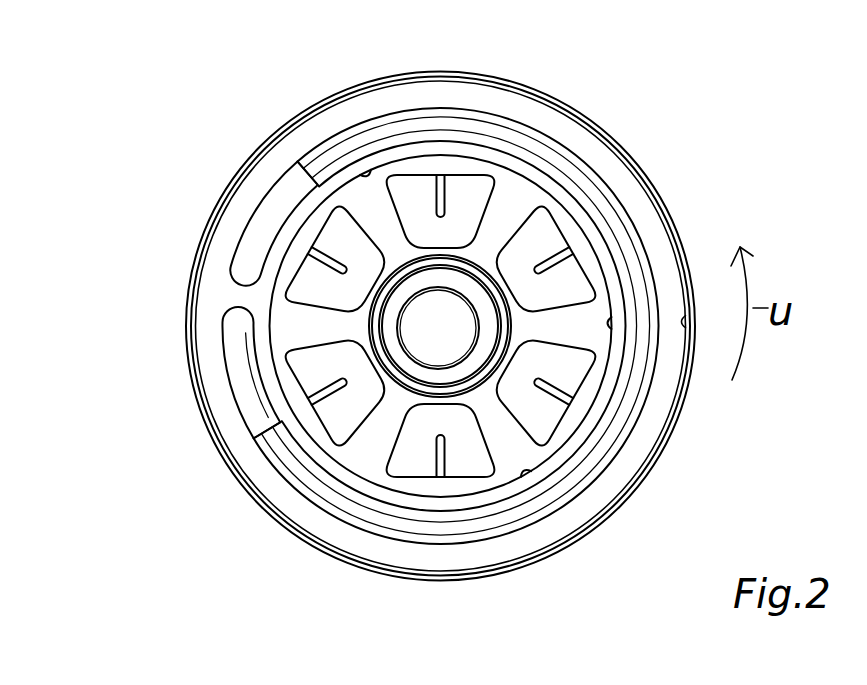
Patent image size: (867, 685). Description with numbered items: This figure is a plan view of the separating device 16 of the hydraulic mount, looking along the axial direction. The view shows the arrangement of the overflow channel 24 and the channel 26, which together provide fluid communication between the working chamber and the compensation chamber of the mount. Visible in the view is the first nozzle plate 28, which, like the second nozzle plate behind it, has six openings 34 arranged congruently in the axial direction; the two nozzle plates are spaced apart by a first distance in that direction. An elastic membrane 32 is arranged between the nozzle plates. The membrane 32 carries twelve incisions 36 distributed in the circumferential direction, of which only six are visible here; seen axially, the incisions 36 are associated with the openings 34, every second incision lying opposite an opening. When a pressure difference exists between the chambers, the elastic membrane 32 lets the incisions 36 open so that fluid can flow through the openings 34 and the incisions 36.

The separating device 16 is at (176, 147).
The overflow channel 24 is at (472, 128).
The channel 26 is at (437, 336).
The first nozzle plate 28 is at (347, 457).
The membrane 32 is at (537, 397).
The openings 34 is at (470, 200).
The incisions 36 is at (534, 270).